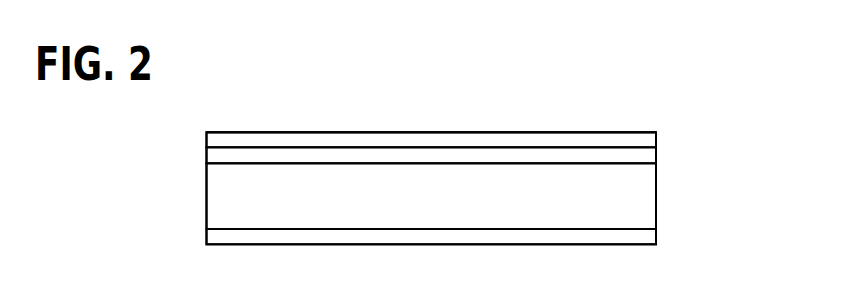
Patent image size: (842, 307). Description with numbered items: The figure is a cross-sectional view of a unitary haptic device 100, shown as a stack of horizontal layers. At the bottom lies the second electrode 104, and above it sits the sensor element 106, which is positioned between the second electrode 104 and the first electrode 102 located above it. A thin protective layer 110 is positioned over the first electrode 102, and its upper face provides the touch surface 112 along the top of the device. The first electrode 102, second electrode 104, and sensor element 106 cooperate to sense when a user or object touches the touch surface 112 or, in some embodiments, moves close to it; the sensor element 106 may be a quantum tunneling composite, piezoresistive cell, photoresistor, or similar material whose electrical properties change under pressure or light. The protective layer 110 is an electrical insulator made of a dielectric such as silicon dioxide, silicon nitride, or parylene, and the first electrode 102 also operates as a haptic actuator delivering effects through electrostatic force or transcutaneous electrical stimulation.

The unitary haptic device 100 is at (593, 101).
The first electrode 102 is at (656, 153).
The second electrode 104 is at (656, 237).
The sensor element 106 is at (656, 203).
The protective layer 110 is at (660, 137).
The touch surface 112 is at (352, 133).